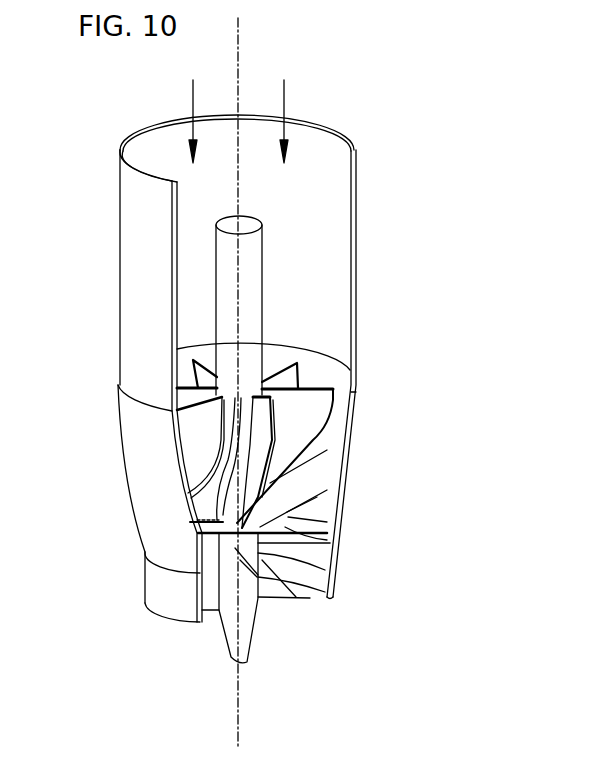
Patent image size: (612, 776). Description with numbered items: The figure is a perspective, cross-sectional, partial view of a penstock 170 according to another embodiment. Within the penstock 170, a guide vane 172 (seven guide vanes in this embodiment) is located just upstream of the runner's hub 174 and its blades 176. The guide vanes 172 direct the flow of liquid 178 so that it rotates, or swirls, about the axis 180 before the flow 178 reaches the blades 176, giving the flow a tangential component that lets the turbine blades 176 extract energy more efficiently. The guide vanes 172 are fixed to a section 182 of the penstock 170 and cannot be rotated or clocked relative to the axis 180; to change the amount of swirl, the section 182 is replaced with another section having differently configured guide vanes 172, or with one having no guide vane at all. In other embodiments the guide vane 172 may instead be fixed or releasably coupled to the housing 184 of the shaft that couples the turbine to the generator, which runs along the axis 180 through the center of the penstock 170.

The penstock 170 is at (390, 302).
The guide vane 172 is at (333, 412).
The runner's hub 174 is at (330, 570).
The blades 176 is at (287, 600).
The flow of liquid 178 is at (191, 102).
The axis 180 is at (240, 48).
The section 182 is at (352, 447).
The housing 184 is at (264, 250).